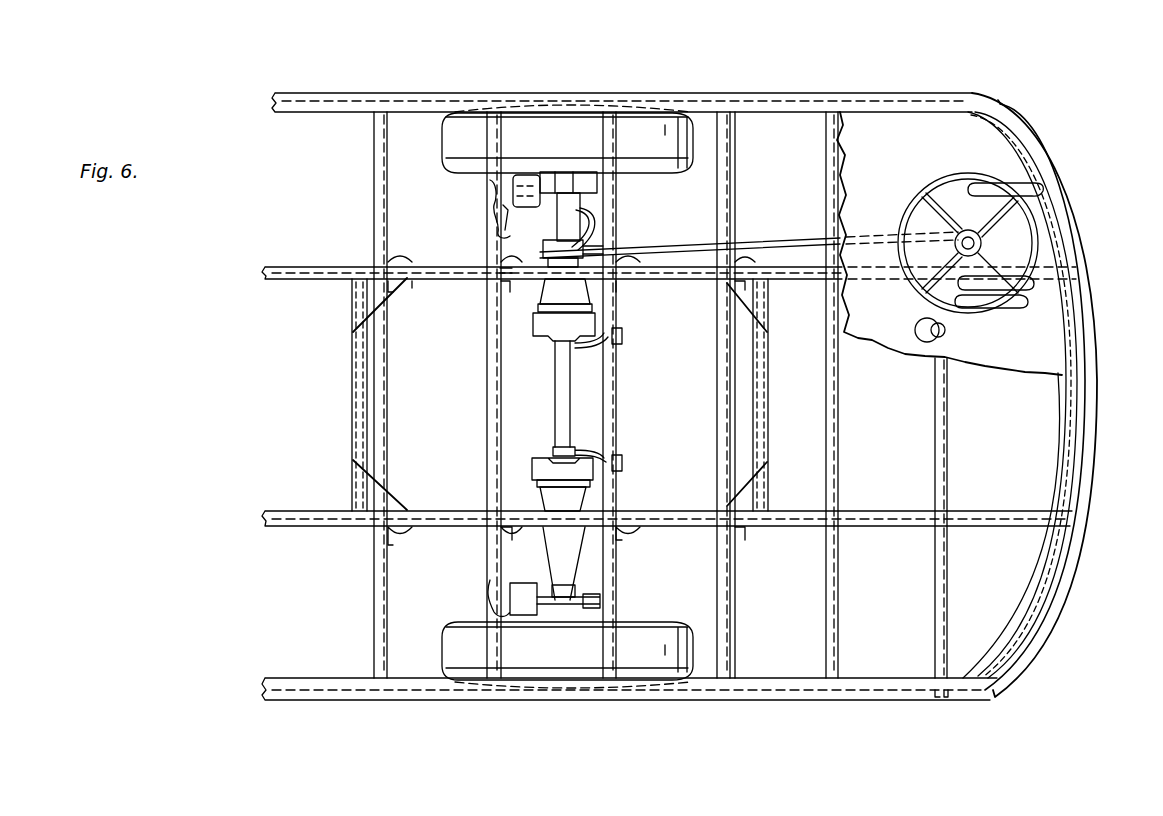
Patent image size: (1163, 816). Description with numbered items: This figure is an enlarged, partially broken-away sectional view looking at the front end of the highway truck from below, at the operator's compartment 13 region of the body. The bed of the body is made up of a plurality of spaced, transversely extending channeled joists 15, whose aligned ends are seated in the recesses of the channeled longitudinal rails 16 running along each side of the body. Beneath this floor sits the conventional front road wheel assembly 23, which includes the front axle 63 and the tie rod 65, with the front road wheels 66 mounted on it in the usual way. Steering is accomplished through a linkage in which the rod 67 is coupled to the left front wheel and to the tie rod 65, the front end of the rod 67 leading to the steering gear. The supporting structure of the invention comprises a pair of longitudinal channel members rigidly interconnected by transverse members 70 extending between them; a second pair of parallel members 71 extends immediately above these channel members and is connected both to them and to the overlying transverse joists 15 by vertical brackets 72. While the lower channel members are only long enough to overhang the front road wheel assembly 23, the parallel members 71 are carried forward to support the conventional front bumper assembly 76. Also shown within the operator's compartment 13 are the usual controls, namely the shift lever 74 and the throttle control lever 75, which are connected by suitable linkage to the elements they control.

The operator's compartment 13 is at (981, 113).
The transverse joists 15 is at (376, 178).
The longitudinal rails 16 is at (312, 112).
The front road wheel assembly 23 is at (647, 218).
The axle 63 is at (555, 398).
The tie rod 65 is at (488, 322).
The front road wheels 66 is at (580, 116).
The rod 67 is at (792, 242).
The transverse members 70 is at (352, 410).
The parallel members 71 is at (278, 282).
The vertical brackets 72 is at (498, 240).
The shift lever 74 is at (930, 340).
The throttle control lever 75 is at (1025, 305).
The front bumper assembly 76 is at (1085, 322).